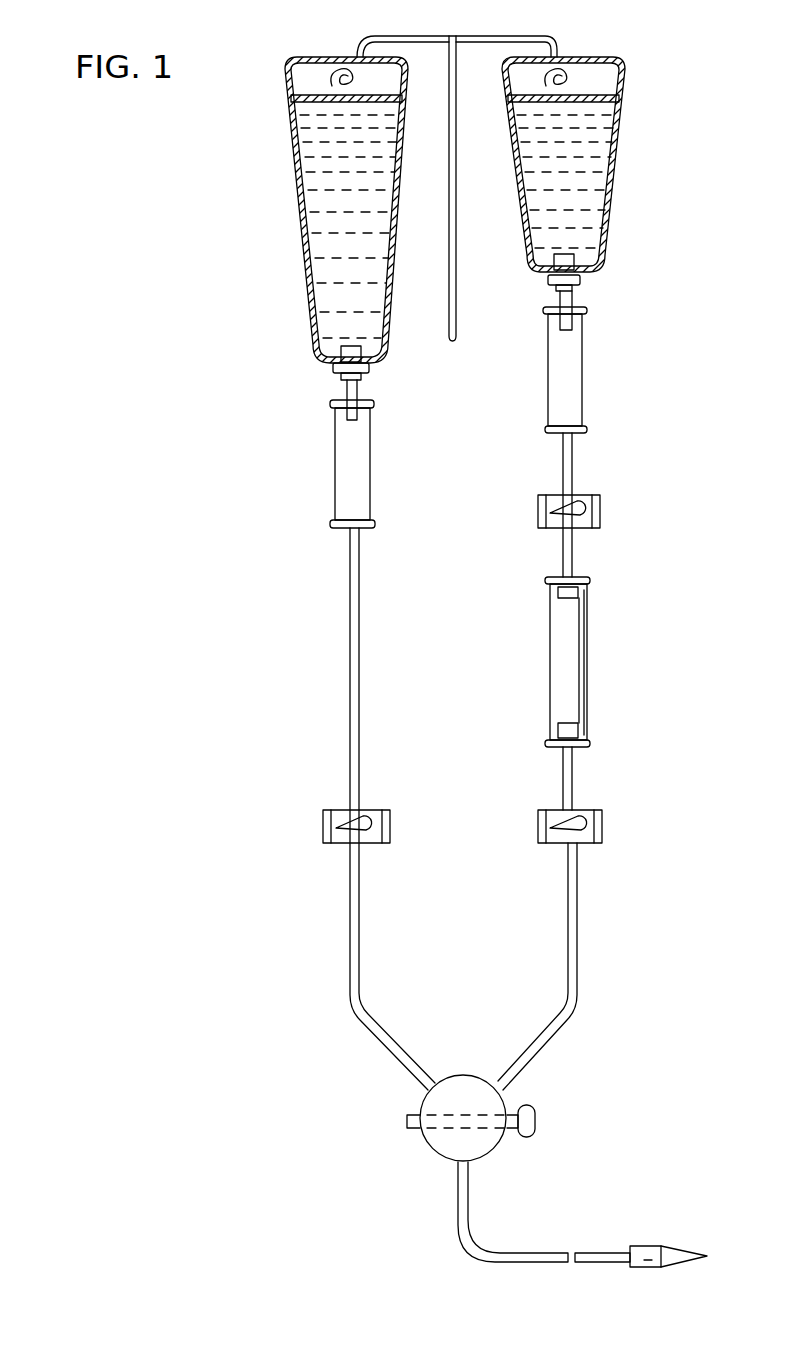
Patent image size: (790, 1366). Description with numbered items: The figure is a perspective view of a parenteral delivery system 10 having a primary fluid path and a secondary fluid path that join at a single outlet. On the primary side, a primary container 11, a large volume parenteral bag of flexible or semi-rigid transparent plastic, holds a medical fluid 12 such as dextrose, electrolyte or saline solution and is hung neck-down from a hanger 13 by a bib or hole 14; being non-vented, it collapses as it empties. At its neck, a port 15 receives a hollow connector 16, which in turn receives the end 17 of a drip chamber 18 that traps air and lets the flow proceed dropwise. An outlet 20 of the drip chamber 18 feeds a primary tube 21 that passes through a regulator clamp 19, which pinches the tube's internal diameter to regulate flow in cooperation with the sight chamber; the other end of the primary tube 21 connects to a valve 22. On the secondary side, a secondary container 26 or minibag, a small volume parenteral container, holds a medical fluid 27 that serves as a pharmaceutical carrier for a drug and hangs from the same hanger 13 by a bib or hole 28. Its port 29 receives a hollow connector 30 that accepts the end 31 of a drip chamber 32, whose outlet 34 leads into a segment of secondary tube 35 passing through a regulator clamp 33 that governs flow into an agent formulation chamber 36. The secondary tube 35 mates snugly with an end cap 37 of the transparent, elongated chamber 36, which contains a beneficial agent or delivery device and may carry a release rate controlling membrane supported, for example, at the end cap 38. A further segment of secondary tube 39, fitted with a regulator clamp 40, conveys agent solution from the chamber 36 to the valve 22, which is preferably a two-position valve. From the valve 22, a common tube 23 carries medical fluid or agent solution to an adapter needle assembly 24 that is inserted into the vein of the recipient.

The parenteral delivery system 10 is at (253, 199).
The primary container 11 is at (298, 160).
The medical fluid 12 is at (316, 257).
The hanger 13 is at (453, 36).
The bib or hole 14 is at (346, 84).
The port 15 is at (338, 362).
The hollow connector 16 is at (345, 391).
The end of drip chamber 17 is at (336, 401).
The drip chamber 18 is at (335, 473).
The regulator clamp 19 is at (323, 823).
The outlet 20 is at (348, 528).
The primary tube 21 is at (350, 628).
The valve 22 is at (536, 1118).
The common tube 23 is at (485, 1250).
The adapter needle assembly 24 is at (640, 1247).
The secondary container 26 is at (610, 153).
The medical fluid 27 is at (575, 206).
The bib or hole 28 is at (548, 84).
The port 29 is at (582, 268).
The hollow connector 30 is at (562, 298).
The end of drip chamber 31 is at (572, 306).
The drip chamber 32 is at (582, 352).
The regulator clamp 33 is at (600, 512).
The outlet 34 is at (575, 440).
The secondary tube 35 is at (575, 472).
The agent formulation chamber 36 is at (588, 650).
The end cap 37 is at (590, 578).
The end cap 38 is at (592, 745).
The secondary tube 39 is at (578, 903).
The regulator clamp 40 is at (602, 836).